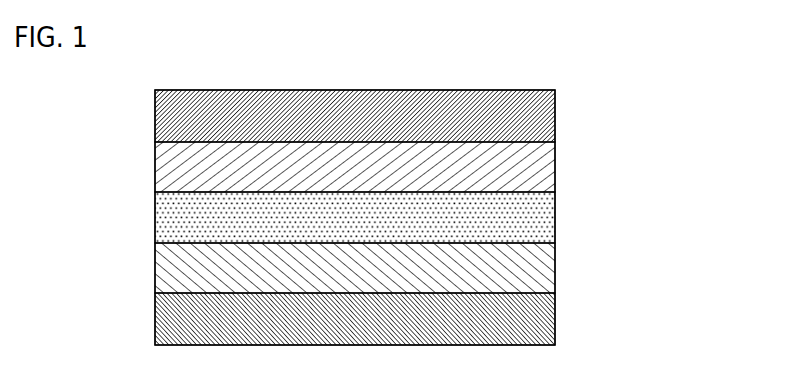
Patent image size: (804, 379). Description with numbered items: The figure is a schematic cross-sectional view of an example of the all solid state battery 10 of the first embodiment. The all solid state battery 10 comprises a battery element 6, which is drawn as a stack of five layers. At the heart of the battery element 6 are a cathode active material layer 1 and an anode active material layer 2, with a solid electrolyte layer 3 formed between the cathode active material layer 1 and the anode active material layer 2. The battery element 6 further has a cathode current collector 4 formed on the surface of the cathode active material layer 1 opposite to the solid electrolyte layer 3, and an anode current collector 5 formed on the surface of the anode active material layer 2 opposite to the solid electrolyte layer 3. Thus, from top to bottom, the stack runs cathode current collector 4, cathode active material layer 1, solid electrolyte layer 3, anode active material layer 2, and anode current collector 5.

The cathode active material layer 1 is at (481, 166).
The anode active material layer 2 is at (481, 267).
The solid electrolyte layer 3 is at (480, 216).
The cathode current collector 4 is at (480, 115).
The anode current collector 5 is at (480, 317).
The battery element 6 is at (431, 175).
The all solid state battery 10 is at (355, 217).